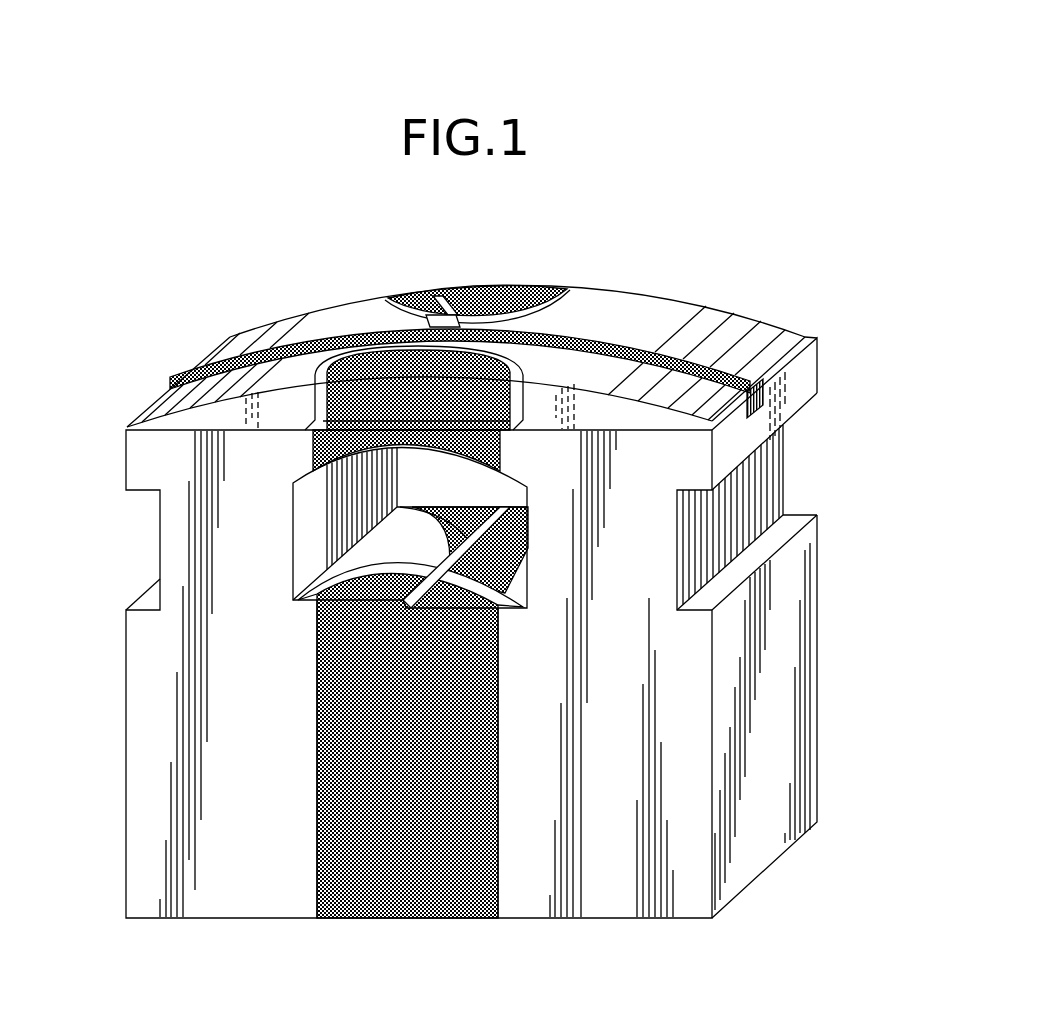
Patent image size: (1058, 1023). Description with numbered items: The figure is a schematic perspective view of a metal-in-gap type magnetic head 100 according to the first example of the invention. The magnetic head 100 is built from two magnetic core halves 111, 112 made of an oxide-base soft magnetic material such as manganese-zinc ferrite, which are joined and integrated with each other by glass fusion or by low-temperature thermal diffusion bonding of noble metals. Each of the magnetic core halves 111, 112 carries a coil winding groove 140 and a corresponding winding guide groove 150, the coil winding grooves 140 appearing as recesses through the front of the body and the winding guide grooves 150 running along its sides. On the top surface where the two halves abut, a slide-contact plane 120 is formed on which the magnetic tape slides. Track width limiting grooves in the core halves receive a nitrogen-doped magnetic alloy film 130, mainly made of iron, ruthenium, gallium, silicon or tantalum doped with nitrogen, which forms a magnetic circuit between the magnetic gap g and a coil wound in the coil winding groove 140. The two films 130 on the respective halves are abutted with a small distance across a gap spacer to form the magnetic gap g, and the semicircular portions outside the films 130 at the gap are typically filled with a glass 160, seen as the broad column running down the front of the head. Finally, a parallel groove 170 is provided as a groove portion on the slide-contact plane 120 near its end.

The MIG-type magnetic head 100 is at (689, 134).
The magnetic core half 111 is at (798, 748).
The magnetic core half 112 is at (143, 836).
The slide-contact plane 120 is at (676, 300).
The nitrogen-doped magnetic alloy film 130 is at (335, 347).
The magnetic gap g is at (441, 294).
The coil winding groove 140 is at (320, 554).
The winding guide groove 150 is at (776, 479).
The glass 160 is at (410, 918).
The parallel groove 170 is at (746, 388).